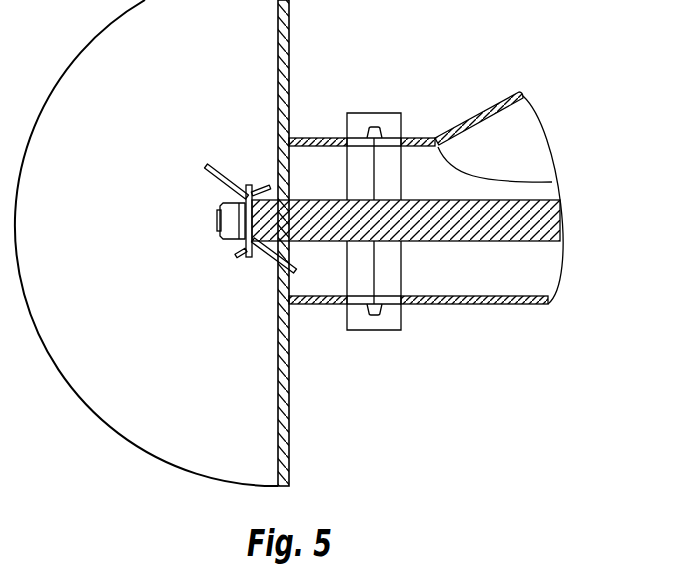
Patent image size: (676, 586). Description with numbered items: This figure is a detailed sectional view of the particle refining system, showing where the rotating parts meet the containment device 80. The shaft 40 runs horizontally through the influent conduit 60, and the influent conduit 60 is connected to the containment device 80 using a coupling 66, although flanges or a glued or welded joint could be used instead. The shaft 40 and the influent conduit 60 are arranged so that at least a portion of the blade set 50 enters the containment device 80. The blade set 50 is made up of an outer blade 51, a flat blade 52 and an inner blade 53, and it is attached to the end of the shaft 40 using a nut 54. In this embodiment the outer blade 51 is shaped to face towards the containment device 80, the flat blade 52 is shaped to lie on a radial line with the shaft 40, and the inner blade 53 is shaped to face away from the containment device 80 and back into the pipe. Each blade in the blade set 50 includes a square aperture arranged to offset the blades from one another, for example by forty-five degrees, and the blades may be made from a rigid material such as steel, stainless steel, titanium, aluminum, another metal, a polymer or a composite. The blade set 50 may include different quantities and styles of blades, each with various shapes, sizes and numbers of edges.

The shaft 40 is at (527, 243).
The blade set 50 is at (200, 222).
The outer blade 51 is at (205, 168).
The flat blade 52 is at (251, 188).
The inner blade 53 is at (276, 262).
The nut 54 is at (218, 238).
The influent conduit 60 is at (527, 113).
The coupling 66 is at (388, 322).
The containment device 80 is at (290, 398).